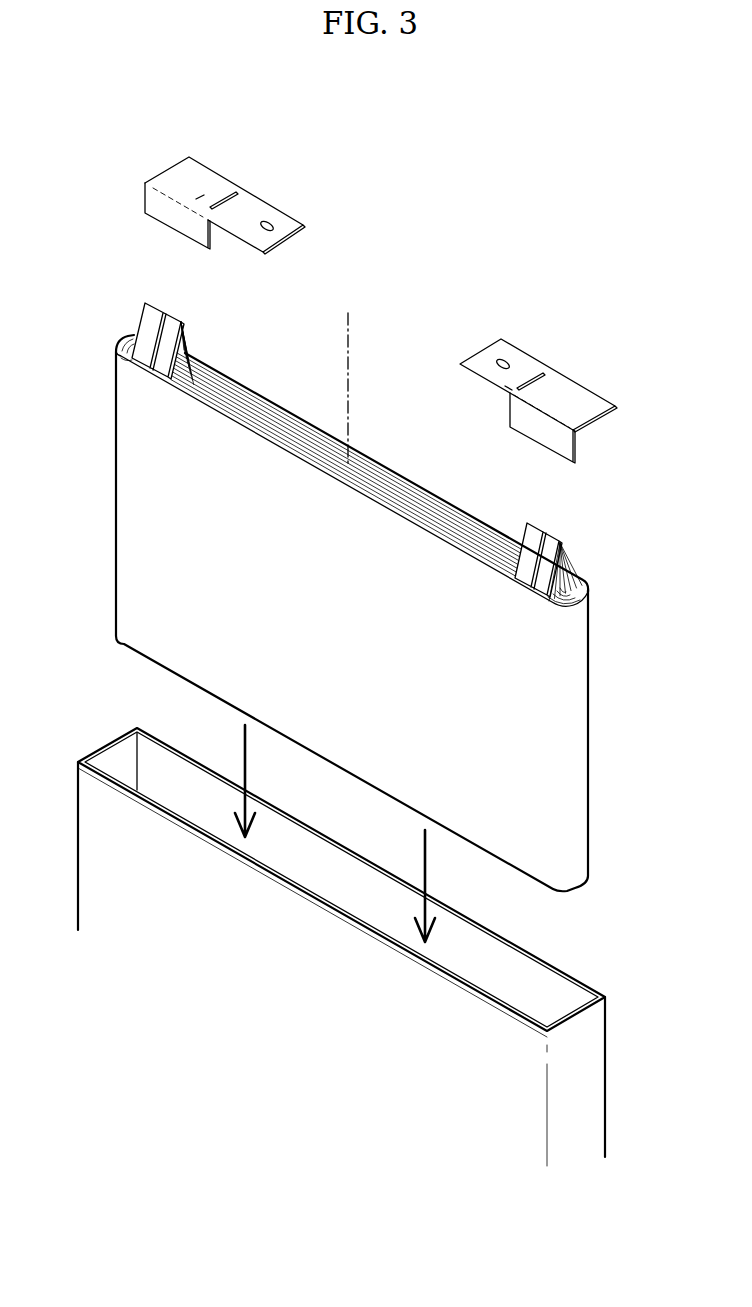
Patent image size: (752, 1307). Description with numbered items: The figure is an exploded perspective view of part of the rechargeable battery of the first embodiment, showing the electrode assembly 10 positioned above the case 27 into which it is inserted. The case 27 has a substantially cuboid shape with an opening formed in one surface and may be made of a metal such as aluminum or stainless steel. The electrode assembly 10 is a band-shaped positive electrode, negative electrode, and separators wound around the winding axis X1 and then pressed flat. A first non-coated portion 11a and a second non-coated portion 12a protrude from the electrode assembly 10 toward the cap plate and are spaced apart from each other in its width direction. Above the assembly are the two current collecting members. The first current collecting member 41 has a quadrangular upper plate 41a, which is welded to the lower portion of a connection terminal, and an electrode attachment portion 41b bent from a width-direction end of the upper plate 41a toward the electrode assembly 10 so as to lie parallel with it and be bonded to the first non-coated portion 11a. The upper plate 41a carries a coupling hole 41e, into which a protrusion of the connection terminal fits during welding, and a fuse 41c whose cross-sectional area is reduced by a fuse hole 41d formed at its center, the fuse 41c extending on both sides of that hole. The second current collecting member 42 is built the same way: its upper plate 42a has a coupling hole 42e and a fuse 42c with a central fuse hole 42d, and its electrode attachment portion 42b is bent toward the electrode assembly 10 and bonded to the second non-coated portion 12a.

The electrode assembly 10 is at (365, 579).
The first non-coated portion 11a is at (575, 555).
The second non-coated portion 12a is at (138, 322).
The case 27 is at (593, 1073).
The first current collecting member 41 is at (554, 377).
The upper plate 41a is at (508, 352).
The electrode attachment portion 41b is at (577, 445).
The fuse 41c is at (545, 372).
The fuse hole 41d is at (507, 382).
The coupling hole 41e is at (498, 360).
The second current collecting member 42 is at (213, 163).
The upper plate 42a is at (253, 207).
The electrode attachment portion 42b is at (148, 202).
The fuse 42c is at (240, 193).
The fuse hole 42d is at (198, 197).
The coupling hole 42e is at (268, 227).
The winding axis X1 is at (350, 358).